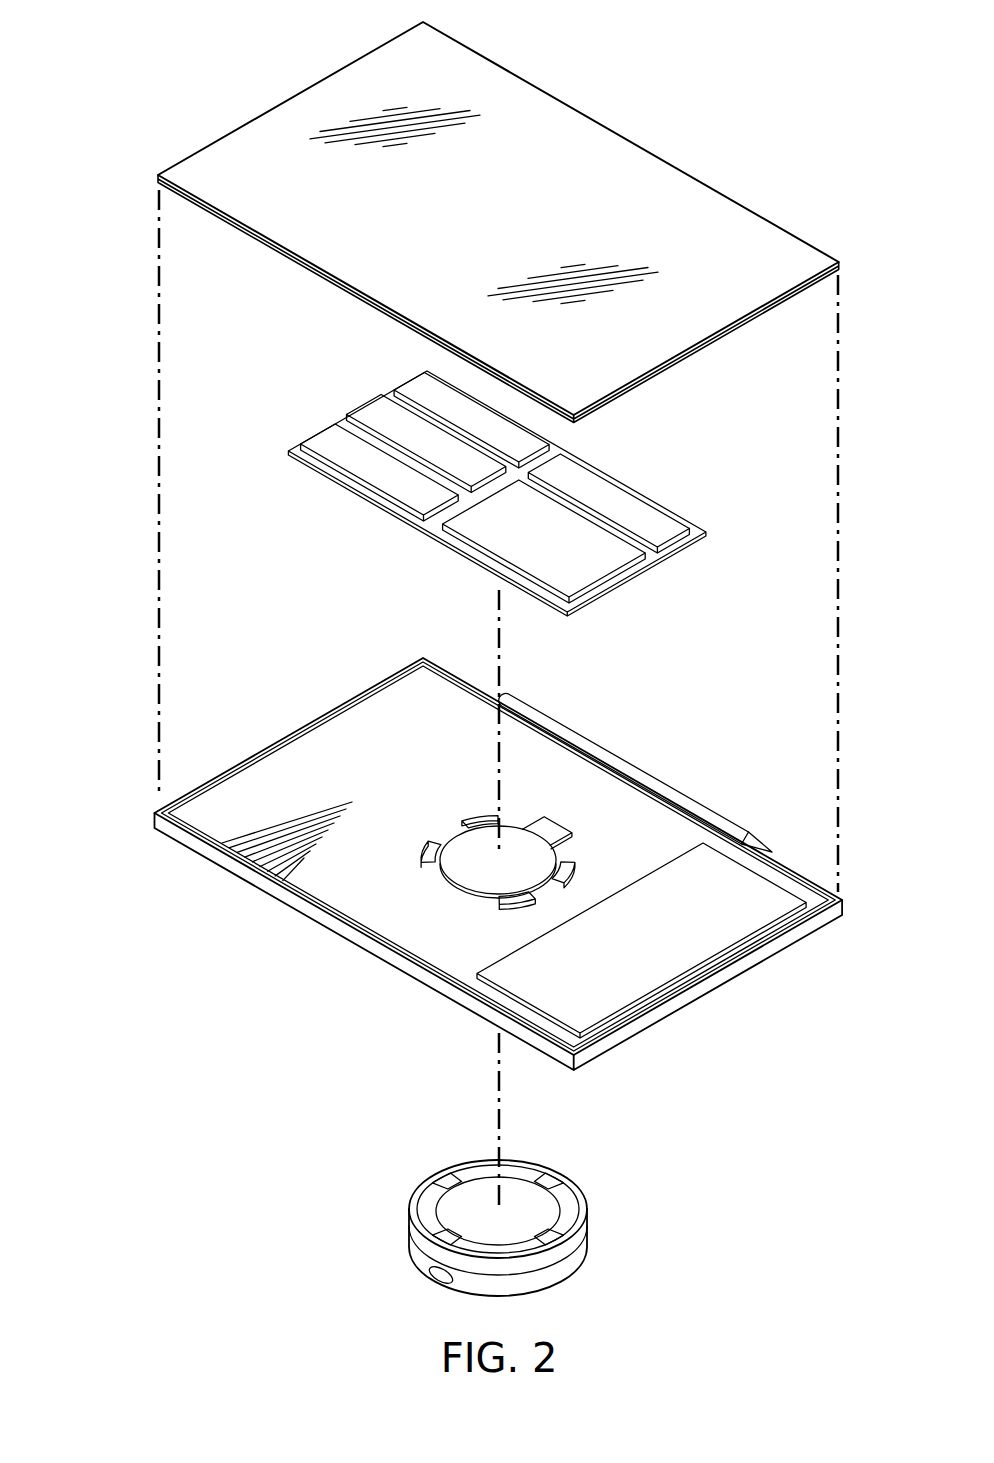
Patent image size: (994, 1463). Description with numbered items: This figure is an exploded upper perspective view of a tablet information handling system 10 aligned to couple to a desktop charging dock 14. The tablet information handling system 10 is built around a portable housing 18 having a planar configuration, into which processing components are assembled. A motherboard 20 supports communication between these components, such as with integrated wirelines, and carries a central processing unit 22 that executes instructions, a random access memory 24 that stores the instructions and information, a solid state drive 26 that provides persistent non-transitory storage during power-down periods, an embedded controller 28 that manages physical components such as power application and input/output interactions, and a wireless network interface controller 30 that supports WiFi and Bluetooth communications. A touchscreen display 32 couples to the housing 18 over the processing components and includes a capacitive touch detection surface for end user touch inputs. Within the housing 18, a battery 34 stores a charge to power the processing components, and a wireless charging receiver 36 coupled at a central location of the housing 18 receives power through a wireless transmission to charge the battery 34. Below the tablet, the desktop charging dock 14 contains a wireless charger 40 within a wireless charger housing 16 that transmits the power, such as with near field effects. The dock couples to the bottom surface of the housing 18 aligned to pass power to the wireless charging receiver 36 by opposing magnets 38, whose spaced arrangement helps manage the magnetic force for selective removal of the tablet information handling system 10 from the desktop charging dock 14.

The tablet information handling system 10 is at (168, 114).
The desktop charging dock 14 is at (523, 1199).
The wireless charger housing 16 is at (409, 1222).
The housing 18 is at (244, 893).
The motherboard 20 is at (697, 527).
The central processing unit (CPU) 22 is at (410, 385).
The random access memory (RAM) 24 is at (364, 408).
The solid state drive (SSD) 26 is at (320, 437).
The embedded controller 28 is at (663, 532).
The wireless network interface controller (WNIC) 30 is at (477, 536).
The touchscreen display 32 is at (658, 158).
The battery 34 is at (663, 873).
The wireless charging receiver 36 is at (542, 828).
The magnets 38 is at (568, 1200).
The wireless charger 40 is at (460, 1195).